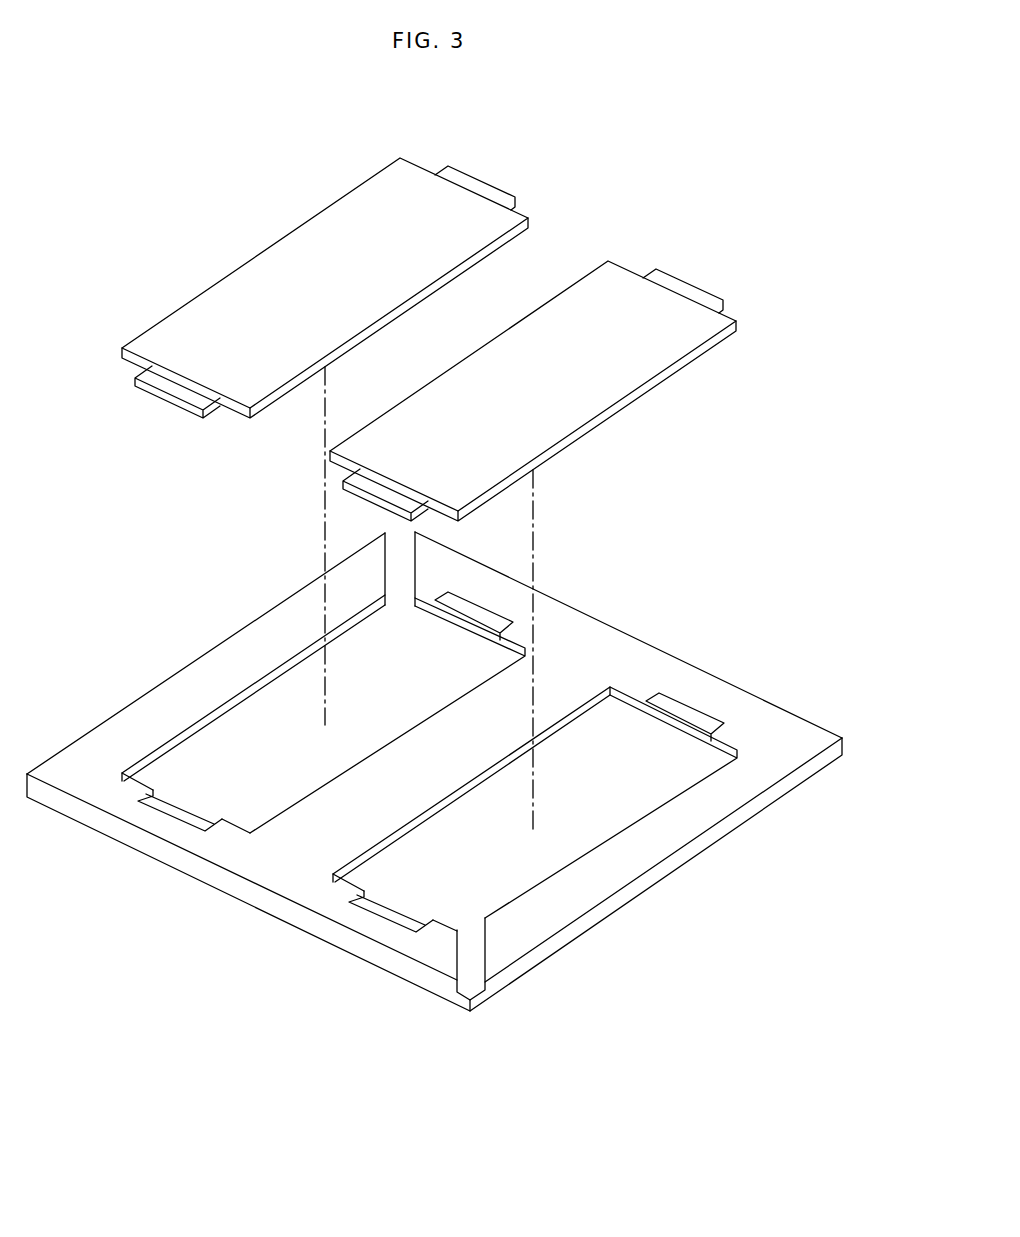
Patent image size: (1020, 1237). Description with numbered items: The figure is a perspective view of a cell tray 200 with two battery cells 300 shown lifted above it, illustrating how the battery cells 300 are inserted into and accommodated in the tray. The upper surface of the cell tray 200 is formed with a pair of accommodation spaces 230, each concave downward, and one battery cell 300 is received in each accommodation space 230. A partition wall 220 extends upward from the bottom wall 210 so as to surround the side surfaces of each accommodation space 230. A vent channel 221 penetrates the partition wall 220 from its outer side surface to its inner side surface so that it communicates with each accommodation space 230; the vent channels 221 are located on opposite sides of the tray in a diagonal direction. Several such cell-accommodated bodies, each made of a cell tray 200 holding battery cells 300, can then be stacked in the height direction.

The cell tray 200 is at (434, 785).
The bottom wall 210 is at (497, 857).
The partition wall 220 is at (255, 653).
The vent channel 221 is at (403, 562).
The accommodation space 230 is at (226, 771).
The battery cell 300 is at (276, 240).